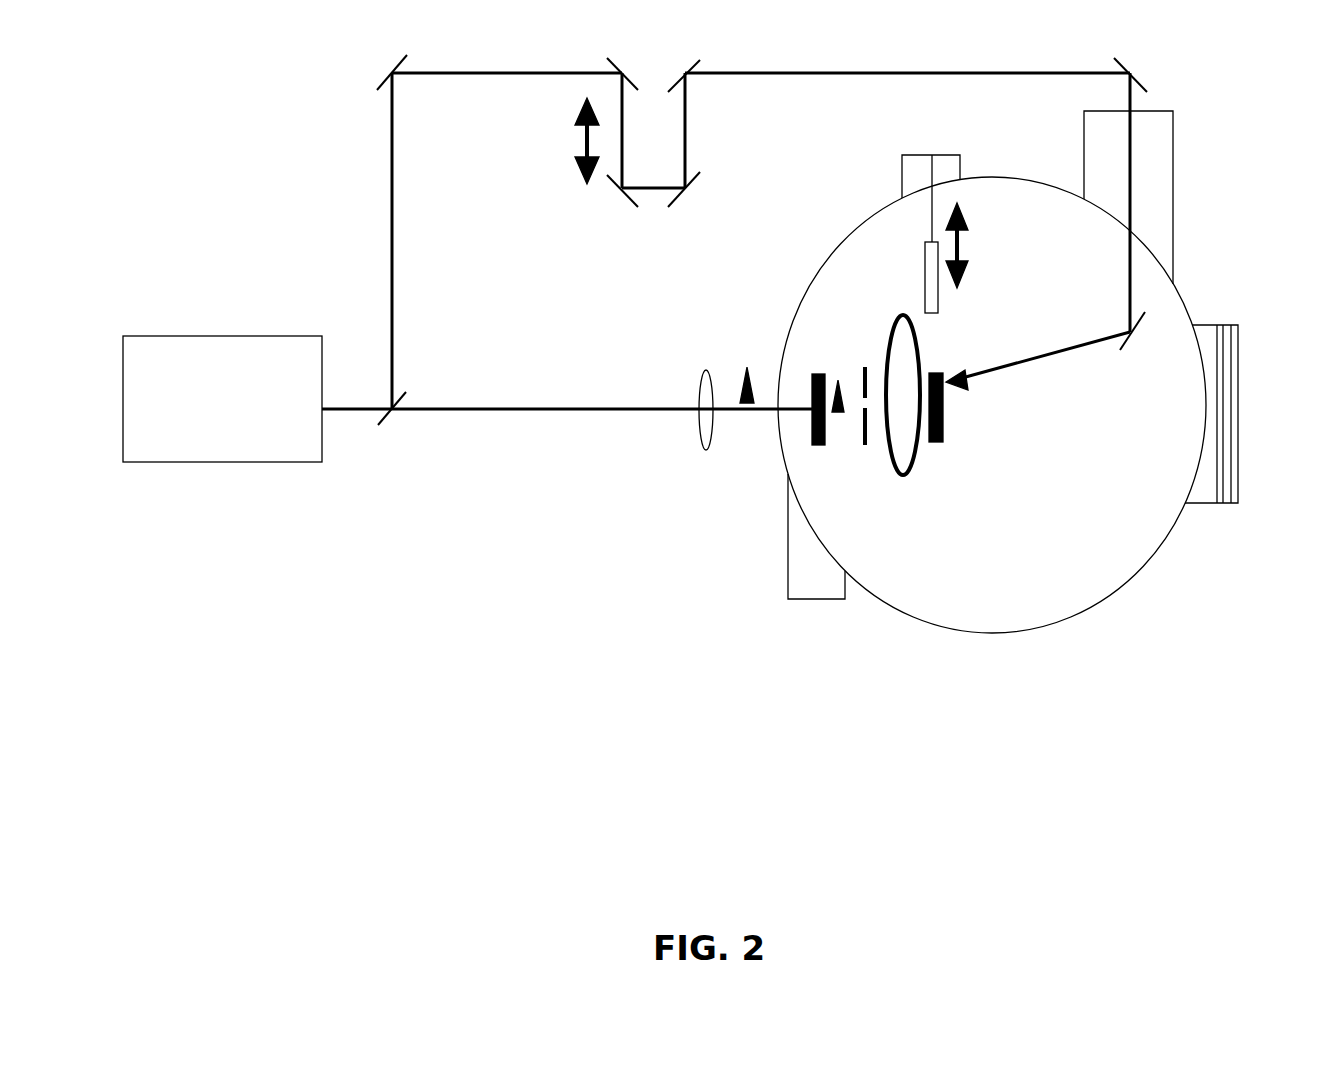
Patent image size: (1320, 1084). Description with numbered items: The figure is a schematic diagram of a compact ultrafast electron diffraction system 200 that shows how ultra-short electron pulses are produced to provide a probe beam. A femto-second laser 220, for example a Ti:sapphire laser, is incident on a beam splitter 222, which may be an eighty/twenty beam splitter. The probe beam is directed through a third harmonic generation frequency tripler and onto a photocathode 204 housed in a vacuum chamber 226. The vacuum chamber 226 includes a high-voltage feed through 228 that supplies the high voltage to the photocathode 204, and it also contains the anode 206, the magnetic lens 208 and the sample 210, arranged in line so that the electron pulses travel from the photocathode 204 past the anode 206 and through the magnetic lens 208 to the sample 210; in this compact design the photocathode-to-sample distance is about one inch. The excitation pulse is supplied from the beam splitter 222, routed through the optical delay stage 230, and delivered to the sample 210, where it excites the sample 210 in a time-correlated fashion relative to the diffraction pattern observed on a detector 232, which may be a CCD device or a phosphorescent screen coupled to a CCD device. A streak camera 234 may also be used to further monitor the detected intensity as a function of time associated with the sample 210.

The compact ultrafast electron diffraction system 200 is at (279, 62).
The photocathode 204 is at (814, 372).
The anode 206 is at (866, 450).
The magnetic lens 208 is at (906, 475).
The sample 210 is at (940, 446).
The femto-second laser 220 is at (222, 399).
The beam splitter 222 is at (392, 418).
The vacuum chamber 226 is at (1052, 627).
The high-voltage feed through 228 is at (812, 603).
The optical delay stage 230 is at (613, 132).
The detector 232 is at (1240, 338).
The streak camera 234 is at (953, 234).